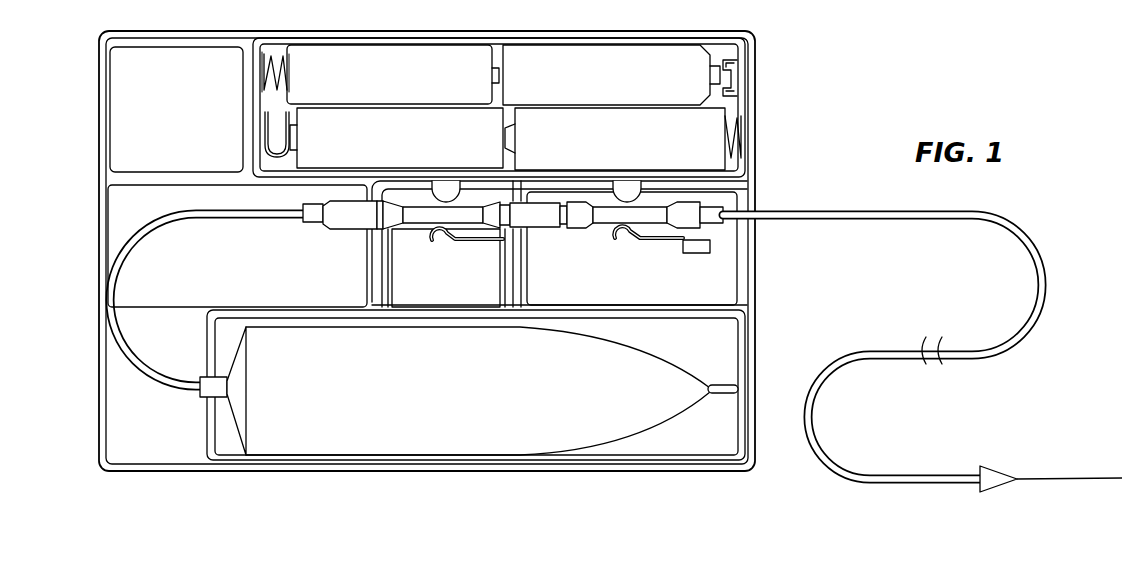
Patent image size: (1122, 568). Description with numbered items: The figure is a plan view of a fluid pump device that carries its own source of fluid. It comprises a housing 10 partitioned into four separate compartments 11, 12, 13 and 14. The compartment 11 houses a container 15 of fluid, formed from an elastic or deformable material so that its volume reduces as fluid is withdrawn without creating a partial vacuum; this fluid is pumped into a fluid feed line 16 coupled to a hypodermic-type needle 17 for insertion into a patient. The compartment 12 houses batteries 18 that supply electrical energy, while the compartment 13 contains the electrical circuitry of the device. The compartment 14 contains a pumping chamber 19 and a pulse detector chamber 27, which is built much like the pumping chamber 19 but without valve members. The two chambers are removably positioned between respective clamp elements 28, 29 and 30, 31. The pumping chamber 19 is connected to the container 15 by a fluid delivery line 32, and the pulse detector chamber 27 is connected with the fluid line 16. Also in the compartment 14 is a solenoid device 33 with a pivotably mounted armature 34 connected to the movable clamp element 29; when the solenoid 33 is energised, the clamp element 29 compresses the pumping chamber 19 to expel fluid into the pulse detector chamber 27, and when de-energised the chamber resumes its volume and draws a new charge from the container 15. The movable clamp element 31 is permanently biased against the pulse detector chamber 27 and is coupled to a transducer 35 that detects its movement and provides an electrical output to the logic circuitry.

The housing 10 is at (760, 95).
The compartment 11 is at (736, 362).
The compartment 12 is at (733, 48).
The compartment 13 is at (125, 114).
The compartment 14 is at (742, 282).
The container 15 is at (592, 445).
The fluid feed line 16 is at (808, 209).
The hypodermic-type needle 17 is at (1055, 475).
The batteries 18 is at (633, 53).
The pumping chamber 19 is at (423, 222).
The pulse detector chamber 27 is at (600, 221).
The clamp element 28 is at (447, 193).
The movable clamp element 29 is at (445, 233).
The clamp element 30 is at (631, 193).
The movable clamp element 31 is at (630, 239).
The fluid delivery line 32 is at (168, 228).
The solenoid device 33 is at (447, 300).
The armature 34 is at (520, 267).
The transducer 35 is at (693, 253).